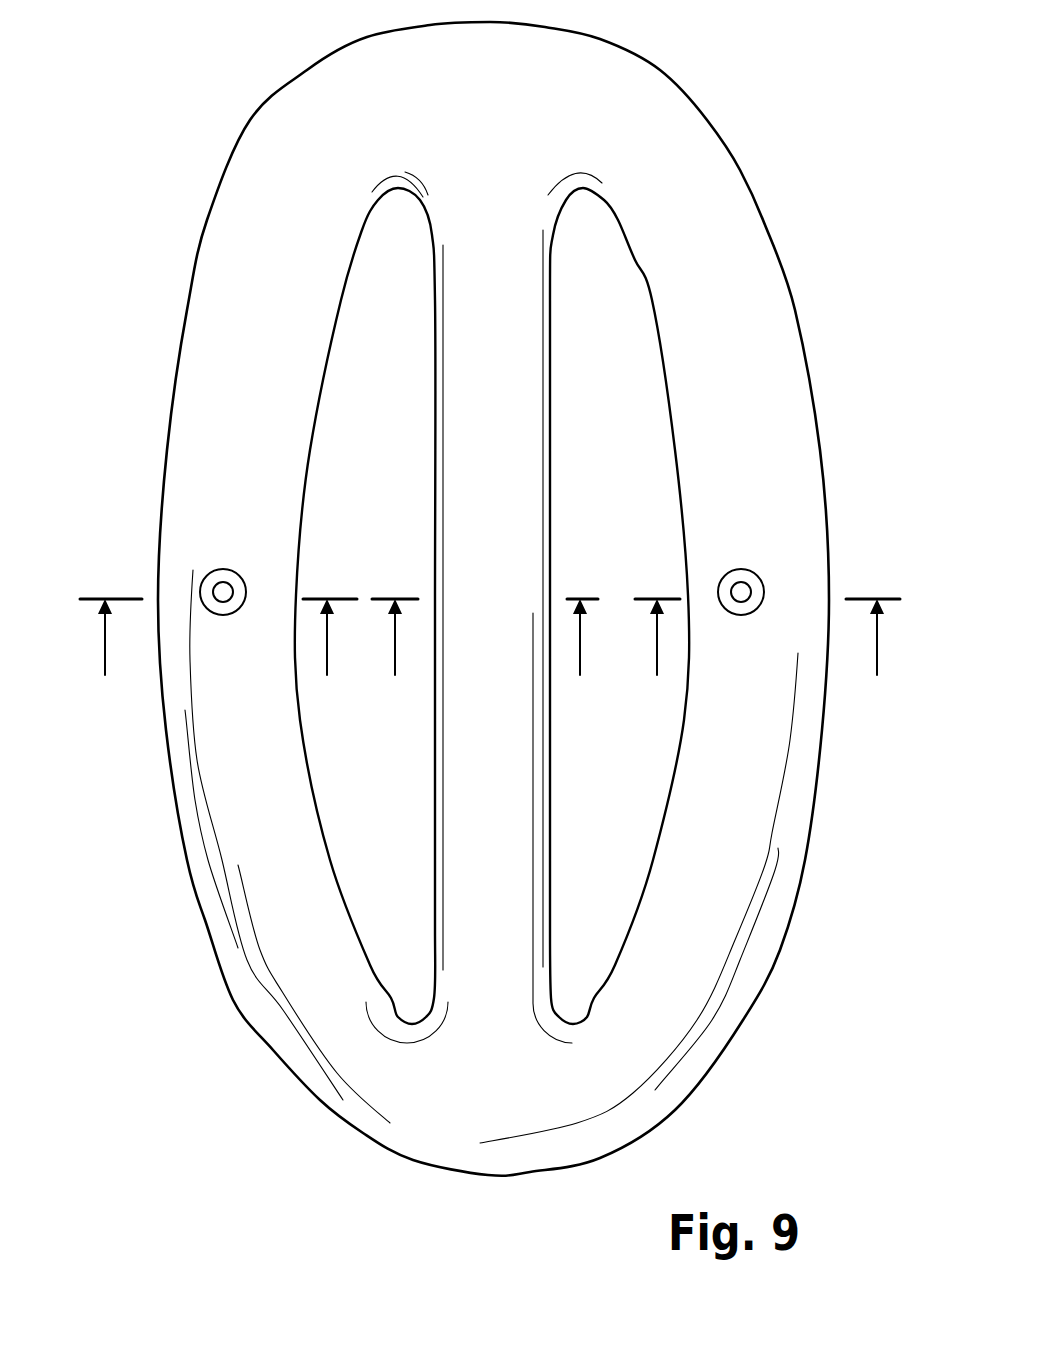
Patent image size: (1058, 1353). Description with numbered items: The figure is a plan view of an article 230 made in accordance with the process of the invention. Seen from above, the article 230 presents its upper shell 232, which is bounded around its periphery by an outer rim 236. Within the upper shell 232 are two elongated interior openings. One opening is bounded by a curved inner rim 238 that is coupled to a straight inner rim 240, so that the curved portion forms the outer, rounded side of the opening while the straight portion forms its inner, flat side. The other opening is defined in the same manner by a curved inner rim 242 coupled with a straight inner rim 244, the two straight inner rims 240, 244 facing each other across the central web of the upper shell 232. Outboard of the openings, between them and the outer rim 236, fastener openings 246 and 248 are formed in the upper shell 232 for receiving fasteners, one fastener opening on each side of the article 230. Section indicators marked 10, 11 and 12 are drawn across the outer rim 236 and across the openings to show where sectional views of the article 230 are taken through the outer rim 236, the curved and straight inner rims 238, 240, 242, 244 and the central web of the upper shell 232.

The article 230 is at (513, 599).
The upper shell 232 is at (778, 444).
The outer rim 236 is at (792, 550).
The curved inner rim 238 is at (680, 473).
The straight inner rim 240 is at (548, 440).
The curved inner rim 242 is at (310, 408).
The straight inner rim 244 is at (430, 453).
The fastener opening 246 is at (761, 613).
The fastener opening 248 is at (210, 614).
The section line 10- 10 is at (215, 637).
The section line 11- 11 is at (486, 637).
The section line 12- 12 is at (764, 637).